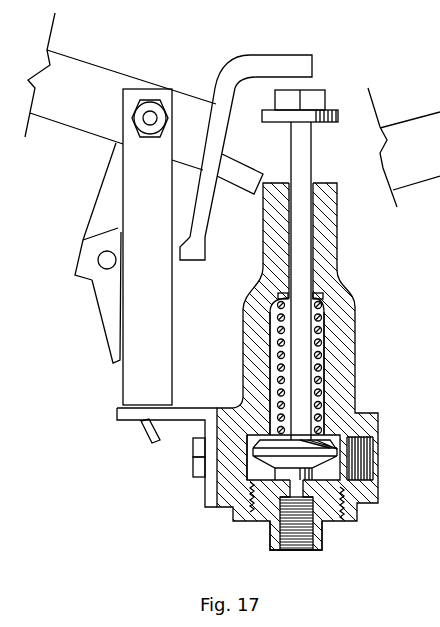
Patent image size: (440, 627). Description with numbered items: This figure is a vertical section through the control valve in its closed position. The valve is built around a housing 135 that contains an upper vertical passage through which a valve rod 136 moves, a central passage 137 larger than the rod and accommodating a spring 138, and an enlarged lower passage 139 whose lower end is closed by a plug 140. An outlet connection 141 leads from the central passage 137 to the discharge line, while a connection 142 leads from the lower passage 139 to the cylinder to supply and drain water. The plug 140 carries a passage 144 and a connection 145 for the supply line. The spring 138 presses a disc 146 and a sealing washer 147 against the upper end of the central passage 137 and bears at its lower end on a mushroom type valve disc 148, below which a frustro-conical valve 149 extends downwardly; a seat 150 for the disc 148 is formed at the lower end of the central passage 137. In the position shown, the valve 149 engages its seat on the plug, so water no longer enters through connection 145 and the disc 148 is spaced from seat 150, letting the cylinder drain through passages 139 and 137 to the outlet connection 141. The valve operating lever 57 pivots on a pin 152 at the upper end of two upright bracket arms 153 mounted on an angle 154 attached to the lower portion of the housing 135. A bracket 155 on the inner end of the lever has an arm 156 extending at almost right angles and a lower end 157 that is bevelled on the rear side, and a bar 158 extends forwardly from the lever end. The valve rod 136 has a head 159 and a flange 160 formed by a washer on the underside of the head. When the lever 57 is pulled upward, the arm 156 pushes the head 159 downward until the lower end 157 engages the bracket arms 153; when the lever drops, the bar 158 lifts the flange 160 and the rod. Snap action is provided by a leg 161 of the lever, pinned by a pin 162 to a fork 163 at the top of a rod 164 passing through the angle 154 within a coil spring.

The valve operating lever 57 is at (107, 82).
The housing 135 is at (327, 245).
The valve rod 136 is at (303, 168).
The central passage 137 is at (325, 382).
The spring 138 is at (322, 362).
The lower passage 139 is at (258, 472).
The plug 140 is at (263, 523).
The outlet connection 141 is at (325, 327).
The connection 142 is at (365, 455).
The passage 144 is at (257, 512).
The connection 145 is at (300, 550).
The disc 146 is at (312, 300).
The sealing washer 147 is at (319, 295).
The mushroom type valve disc 148 is at (342, 427).
The frustro-conical valve 149 is at (307, 487).
The seat 150 is at (324, 441).
The pin 152 is at (147, 126).
The bracket arms 153 is at (163, 345).
The angle 154 is at (188, 410).
The bracket 155 is at (223, 83).
The arm 156 is at (287, 62).
The lower end 157 is at (181, 258).
The bar 158 is at (248, 170).
The head 159 is at (318, 90).
The flange 160 is at (322, 121).
The leg 161 is at (107, 192).
The pin 162 is at (103, 262).
The fork 163 is at (113, 318).
The rod 164 is at (147, 438).